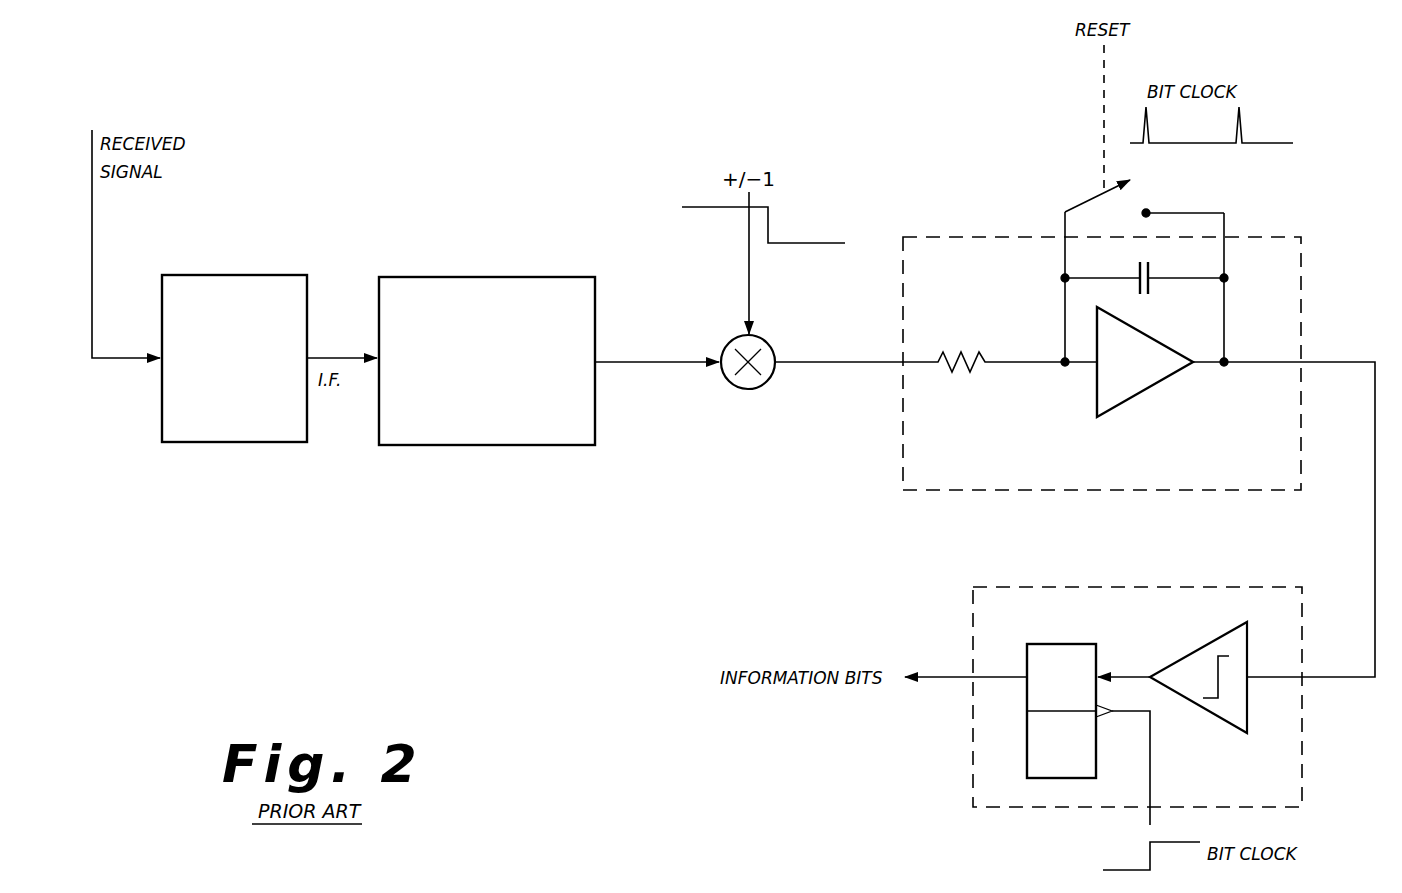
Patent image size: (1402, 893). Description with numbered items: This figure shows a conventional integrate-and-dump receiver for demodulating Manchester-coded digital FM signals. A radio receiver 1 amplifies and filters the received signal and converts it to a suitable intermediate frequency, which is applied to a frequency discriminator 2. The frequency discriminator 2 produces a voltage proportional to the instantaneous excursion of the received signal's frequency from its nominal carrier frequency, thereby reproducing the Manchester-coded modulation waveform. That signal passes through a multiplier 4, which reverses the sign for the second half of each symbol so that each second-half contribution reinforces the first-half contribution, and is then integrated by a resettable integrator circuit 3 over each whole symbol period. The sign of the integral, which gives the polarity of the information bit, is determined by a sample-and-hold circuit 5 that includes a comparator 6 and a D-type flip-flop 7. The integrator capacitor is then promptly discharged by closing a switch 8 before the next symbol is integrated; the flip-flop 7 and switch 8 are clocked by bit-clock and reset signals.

The radio receiver 1 is at (231, 443).
The frequency discriminator 2 is at (485, 446).
The resettable integrator circuit 3 is at (1118, 326).
The multiplier 4 is at (748, 390).
The sample-and-hold circuit 5 is at (1153, 690).
The comparator 6 is at (1213, 718).
The D-type flip-flop 7 is at (1027, 742).
The switch 8 is at (1101, 193).